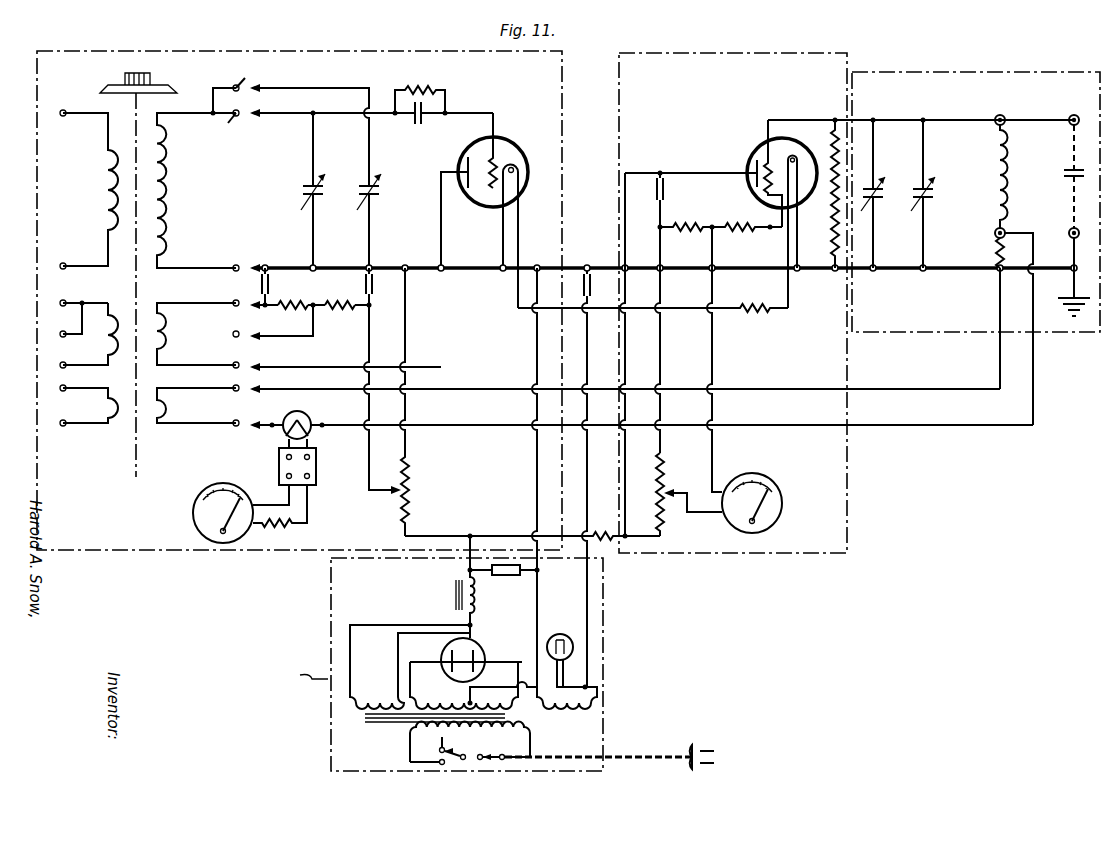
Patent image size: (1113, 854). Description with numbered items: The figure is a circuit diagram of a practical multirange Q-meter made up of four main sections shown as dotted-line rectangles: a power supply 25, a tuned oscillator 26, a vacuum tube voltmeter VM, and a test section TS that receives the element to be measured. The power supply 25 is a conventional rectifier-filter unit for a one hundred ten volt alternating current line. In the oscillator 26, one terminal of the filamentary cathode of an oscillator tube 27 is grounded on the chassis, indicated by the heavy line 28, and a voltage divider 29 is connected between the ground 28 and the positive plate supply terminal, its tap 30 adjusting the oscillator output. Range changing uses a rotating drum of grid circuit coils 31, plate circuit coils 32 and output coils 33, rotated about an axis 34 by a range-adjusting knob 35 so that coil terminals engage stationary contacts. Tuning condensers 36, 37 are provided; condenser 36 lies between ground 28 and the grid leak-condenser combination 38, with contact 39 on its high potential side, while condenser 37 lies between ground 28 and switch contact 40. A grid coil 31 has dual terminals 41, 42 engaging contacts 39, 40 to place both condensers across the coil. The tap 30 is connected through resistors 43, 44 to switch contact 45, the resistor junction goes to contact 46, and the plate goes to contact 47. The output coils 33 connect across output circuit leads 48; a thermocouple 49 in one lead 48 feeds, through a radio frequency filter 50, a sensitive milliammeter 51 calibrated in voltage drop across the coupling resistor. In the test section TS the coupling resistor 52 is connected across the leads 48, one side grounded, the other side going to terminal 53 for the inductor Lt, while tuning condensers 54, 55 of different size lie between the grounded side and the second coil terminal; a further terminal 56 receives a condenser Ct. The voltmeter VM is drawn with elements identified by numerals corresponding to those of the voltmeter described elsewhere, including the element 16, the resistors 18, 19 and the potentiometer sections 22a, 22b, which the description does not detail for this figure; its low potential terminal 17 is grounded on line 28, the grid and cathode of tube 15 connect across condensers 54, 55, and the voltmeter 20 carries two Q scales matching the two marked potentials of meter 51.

The tube 15 is at (750, 152).
The conductor 16 is at (626, 538).
The low potential terminal 17 is at (662, 274).
The resistor 18 is at (748, 226).
The resistor 19 is at (692, 226).
The voltmeter 20 is at (782, 486).
The potentiometer section 22a is at (668, 516).
The potentiometer section 22b is at (670, 476).
The power supply 25 is at (330, 616).
The tuned oscillator 26 is at (184, 48).
The oscillator tube 27 is at (519, 146).
The ground 28 is at (596, 256).
The voltage divider 29 is at (410, 490).
The tap 30 is at (388, 498).
The grid circuit coil 31 is at (172, 190).
The plate circuit coil 32 is at (170, 343).
The output coil 33 is at (170, 410).
The axis 34 is at (136, 440).
The range-adjusting knob 35 is at (124, 86).
The condenser 36 is at (298, 192).
The condenser 37 is at (376, 198).
The grid leak-condenser combination 38 is at (422, 120).
The contact 39 is at (254, 114).
The switch contact 40 is at (259, 88).
The terminal 41 is at (75, 105).
The terminal 42 is at (228, 88).
The resistor 43 is at (352, 300).
The resistor 44 is at (302, 295).
The switch contact 45 is at (255, 308).
The contact 46 is at (252, 338).
The contact 47 is at (258, 368).
The output circuit leads 48 is at (316, 390).
The thermocouple 49 is at (282, 432).
The radio frequency filter 50 is at (278, 460).
The milliammeter 51 is at (218, 480).
The coupling resistor 52 is at (992, 256).
The terminal 53 is at (996, 234).
The tuning condenser 54 is at (874, 204).
The tuning condenser 55 is at (930, 204).
The test terminal 56 is at (1070, 234).
The voltmeter VM is at (816, 56).
The test section TS is at (1052, 76).
The inductor Lt is at (996, 171).
The condenser Ct is at (1070, 176).